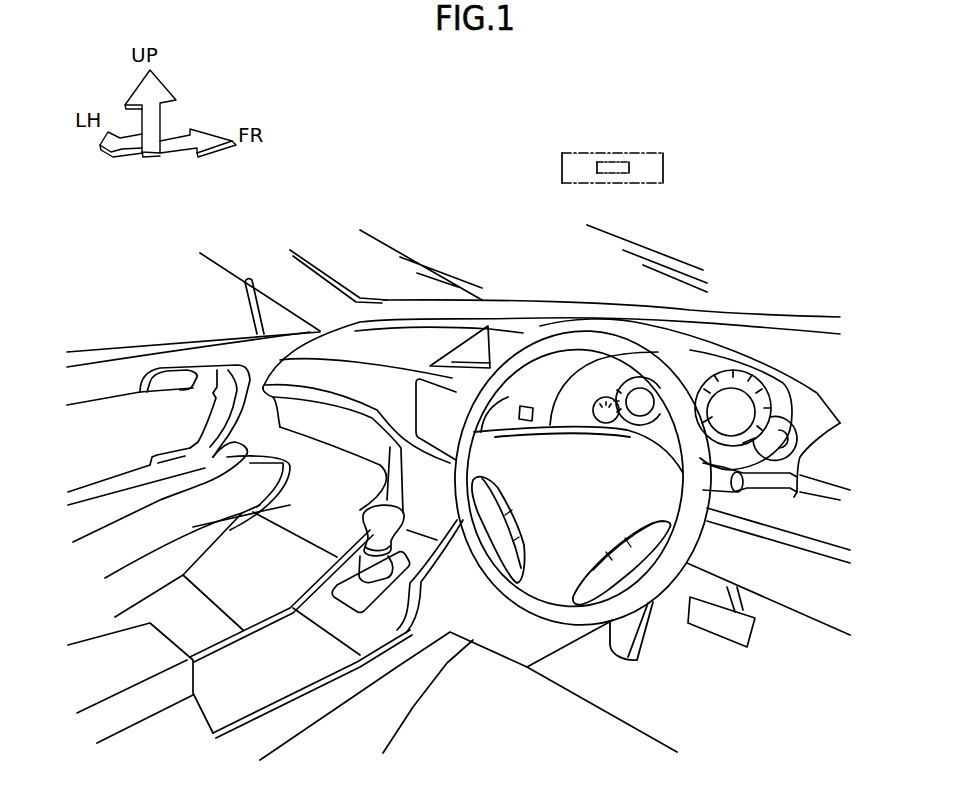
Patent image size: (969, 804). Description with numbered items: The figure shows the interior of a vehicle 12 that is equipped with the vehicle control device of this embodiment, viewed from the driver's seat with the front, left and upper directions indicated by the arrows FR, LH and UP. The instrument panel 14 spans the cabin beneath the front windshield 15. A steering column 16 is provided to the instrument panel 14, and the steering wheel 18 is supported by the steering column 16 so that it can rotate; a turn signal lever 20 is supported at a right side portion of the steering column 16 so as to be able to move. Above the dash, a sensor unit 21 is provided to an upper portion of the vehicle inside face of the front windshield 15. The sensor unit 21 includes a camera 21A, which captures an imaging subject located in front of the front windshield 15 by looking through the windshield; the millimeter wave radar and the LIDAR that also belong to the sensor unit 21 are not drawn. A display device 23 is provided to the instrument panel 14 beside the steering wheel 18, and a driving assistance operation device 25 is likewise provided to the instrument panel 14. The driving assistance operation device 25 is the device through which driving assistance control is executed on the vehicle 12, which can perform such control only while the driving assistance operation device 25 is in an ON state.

The vehicle 12 is at (749, 201).
The instrument panel 14 is at (376, 382).
The front windshield 15 is at (304, 272).
The steering column 16 is at (660, 400).
The steering wheel 18 is at (533, 584).
The turn signal lever 20 is at (740, 506).
The sensor unit 21 is at (562, 165).
The camera 21A is at (623, 160).
The display device 23 is at (446, 402).
The driving assistance operation device 25 is at (527, 406).